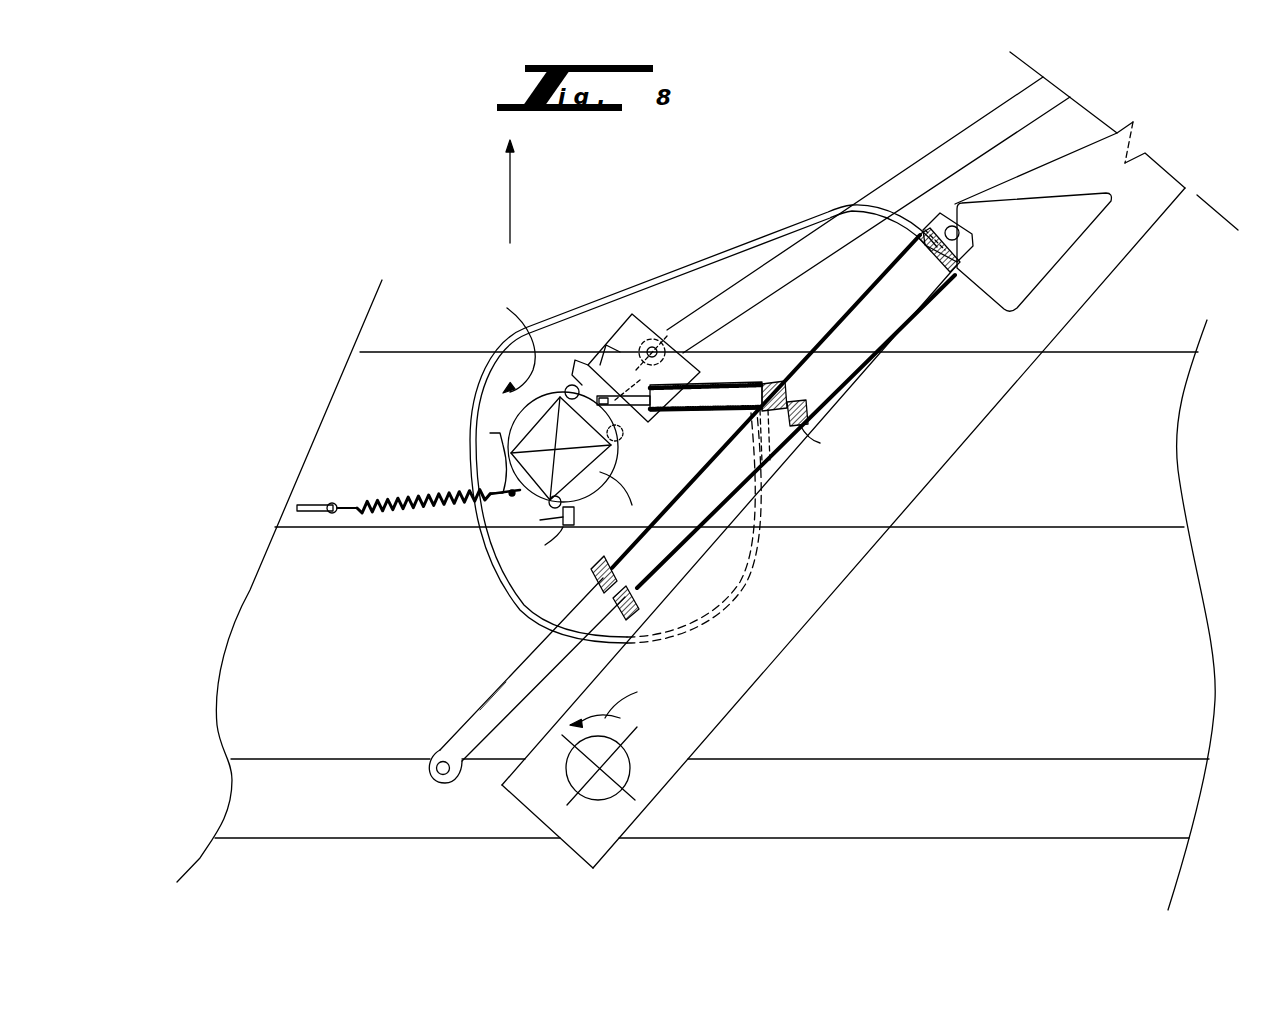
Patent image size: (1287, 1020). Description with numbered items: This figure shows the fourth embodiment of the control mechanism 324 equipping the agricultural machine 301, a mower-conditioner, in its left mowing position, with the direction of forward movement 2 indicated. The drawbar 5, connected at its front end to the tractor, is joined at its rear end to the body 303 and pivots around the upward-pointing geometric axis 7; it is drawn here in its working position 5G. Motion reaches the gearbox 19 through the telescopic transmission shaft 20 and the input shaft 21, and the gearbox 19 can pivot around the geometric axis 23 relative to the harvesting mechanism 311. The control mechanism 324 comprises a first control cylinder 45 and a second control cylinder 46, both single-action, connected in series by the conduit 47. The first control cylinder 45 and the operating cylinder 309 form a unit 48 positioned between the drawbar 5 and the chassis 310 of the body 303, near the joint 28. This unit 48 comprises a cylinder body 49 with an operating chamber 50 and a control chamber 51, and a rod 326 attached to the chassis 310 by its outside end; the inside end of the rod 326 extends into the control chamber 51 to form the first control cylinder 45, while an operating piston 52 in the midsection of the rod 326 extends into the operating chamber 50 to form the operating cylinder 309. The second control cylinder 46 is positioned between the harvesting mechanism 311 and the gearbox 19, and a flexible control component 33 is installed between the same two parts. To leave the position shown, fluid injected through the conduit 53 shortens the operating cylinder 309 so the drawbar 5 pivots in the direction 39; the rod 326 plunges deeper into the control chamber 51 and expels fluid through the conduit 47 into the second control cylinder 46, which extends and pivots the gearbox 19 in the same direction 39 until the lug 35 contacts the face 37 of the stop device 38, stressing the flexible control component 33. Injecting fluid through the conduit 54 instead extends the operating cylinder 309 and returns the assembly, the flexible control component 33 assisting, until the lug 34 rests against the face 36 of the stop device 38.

The direction of forward movement 2 is at (507, 195).
The drawbar 5 is at (862, 548).
The working position 5G is at (1034, 332).
The geometric axis 7 is at (598, 768).
The gearbox 19 is at (565, 390).
The telescopic transmission shaft 20 is at (893, 187).
The input shaft 21 is at (640, 340).
The geometric axis 23 is at (567, 440).
The joint 28 is at (442, 763).
The flexible control component 33 is at (437, 492).
The lug 34 is at (598, 480).
The lug 35 is at (482, 443).
The face 36 is at (577, 525).
The face 37 is at (563, 520).
The stop device 38 is at (565, 535).
The direction 39 is at (574, 508).
The first control cylinder 45 is at (862, 287).
The second control cylinder 46 is at (742, 372).
The conduit 47 is at (783, 222).
The unit 48 is at (527, 648).
The cylinder body 49 is at (780, 445).
The operating chamber 50 is at (688, 540).
The control chamber 51 is at (902, 304).
The operating piston 52 is at (630, 573).
The conduit 53 is at (640, 607).
The conduit 54 is at (815, 437).
The agricultural machine 301 is at (422, 296).
The body 303 is at (1095, 677).
The operating cylinder 309 is at (658, 504).
The chassis 310 is at (1026, 773).
The harvesting mechanism 311 is at (1136, 340).
The control mechanism 324 is at (467, 560).
The rod 326 is at (498, 700).